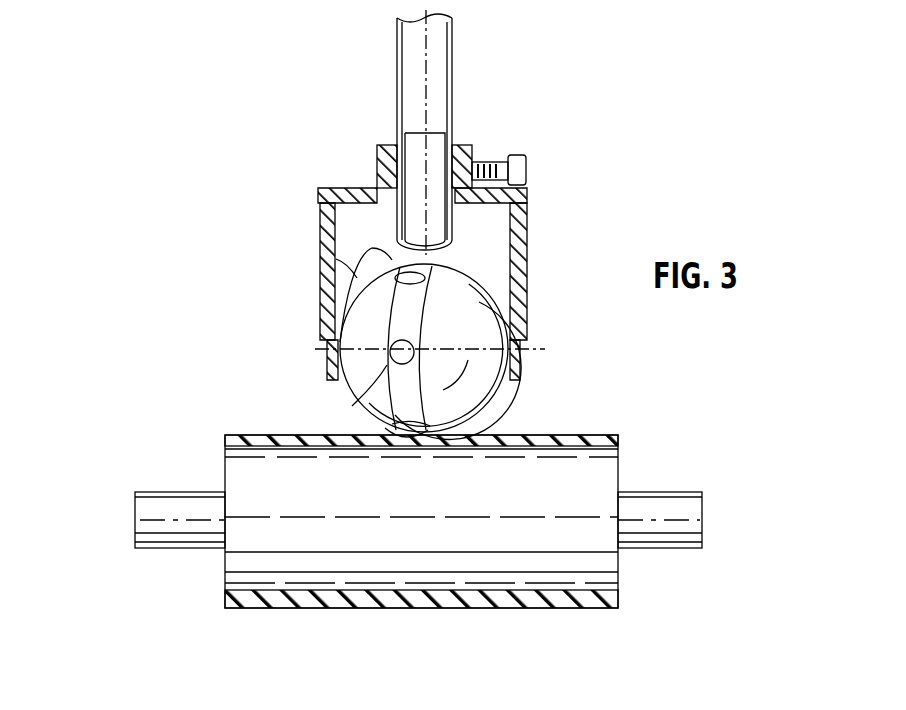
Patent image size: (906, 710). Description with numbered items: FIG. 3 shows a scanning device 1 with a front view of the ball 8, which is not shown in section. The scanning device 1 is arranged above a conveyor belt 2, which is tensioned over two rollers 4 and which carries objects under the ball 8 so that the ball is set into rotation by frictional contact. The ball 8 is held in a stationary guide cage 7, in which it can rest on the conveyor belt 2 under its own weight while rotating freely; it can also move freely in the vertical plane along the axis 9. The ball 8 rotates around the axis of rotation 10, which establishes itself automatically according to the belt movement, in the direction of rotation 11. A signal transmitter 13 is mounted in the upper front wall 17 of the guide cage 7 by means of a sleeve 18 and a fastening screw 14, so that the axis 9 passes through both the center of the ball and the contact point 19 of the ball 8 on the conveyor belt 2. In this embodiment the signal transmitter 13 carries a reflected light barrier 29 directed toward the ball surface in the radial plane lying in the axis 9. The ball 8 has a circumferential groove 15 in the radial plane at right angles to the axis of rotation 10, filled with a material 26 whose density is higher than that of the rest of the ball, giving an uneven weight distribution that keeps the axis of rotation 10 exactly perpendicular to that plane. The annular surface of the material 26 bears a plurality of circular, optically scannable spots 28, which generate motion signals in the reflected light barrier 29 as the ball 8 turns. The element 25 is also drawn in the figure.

The scanning device 1 is at (278, 208).
The conveyor belt 2 is at (240, 435).
The rollers 4 is at (232, 563).
The guide cage 7 is at (531, 252).
The ball 8 is at (492, 392).
The axis 9 is at (396, 48).
The axis of rotation 10 is at (518, 350).
The direction of rotation 11 is at (332, 257).
The signal transmitter 13 is at (447, 70).
The fastening screw 14 is at (527, 166).
The circumferential groove 15 is at (383, 318).
The upper front wall 17 is at (356, 200).
The sleeve 18 is at (382, 146).
The contact point 19 is at (412, 435).
The bore 25 is at (414, 292).
The material 26 is at (406, 323).
The optically scannable spots 28 is at (413, 244).
The reflected light barrier 29 is at (437, 140).